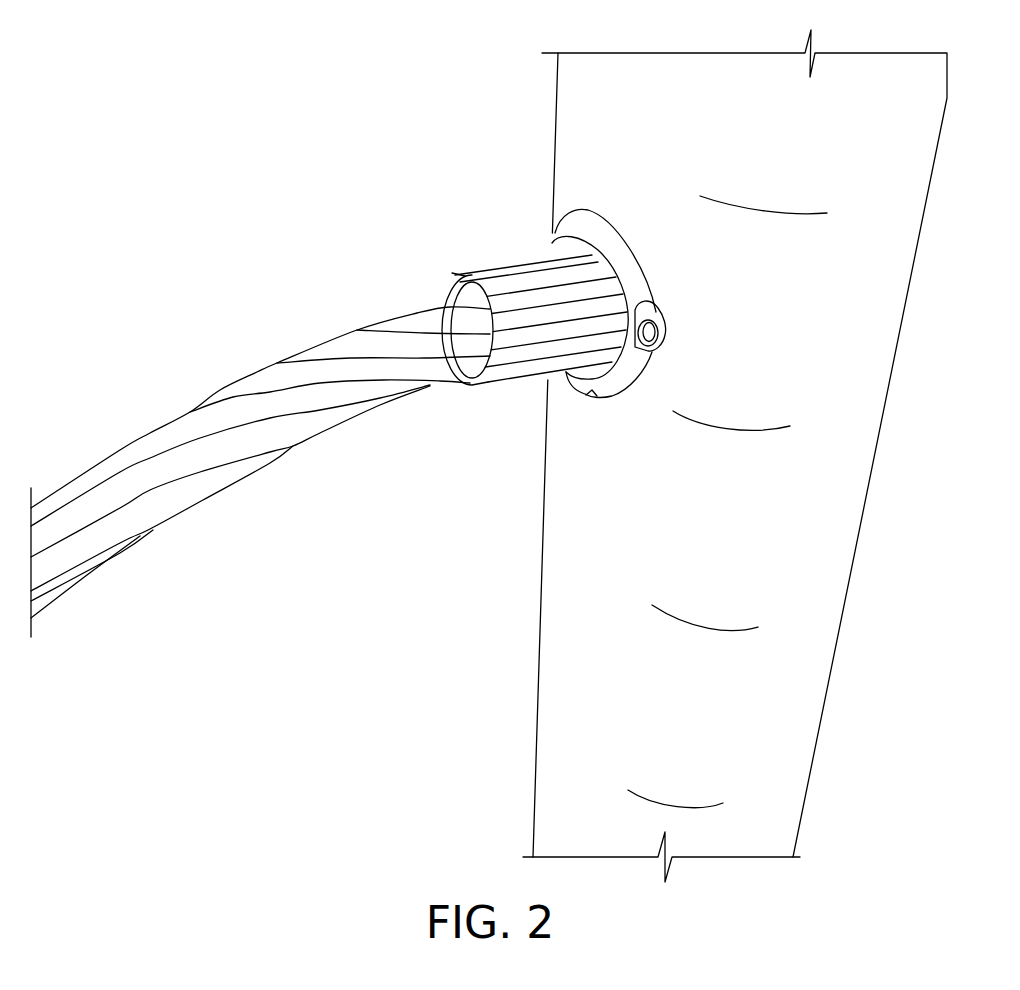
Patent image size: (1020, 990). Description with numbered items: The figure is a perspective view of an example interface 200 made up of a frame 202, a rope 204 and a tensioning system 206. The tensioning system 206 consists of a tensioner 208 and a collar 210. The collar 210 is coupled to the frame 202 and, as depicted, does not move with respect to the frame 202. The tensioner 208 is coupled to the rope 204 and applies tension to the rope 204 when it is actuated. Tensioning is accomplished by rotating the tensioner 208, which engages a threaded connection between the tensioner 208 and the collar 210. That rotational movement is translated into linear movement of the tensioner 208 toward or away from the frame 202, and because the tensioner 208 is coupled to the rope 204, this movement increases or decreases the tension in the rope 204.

The interface 200 is at (143, 101).
The frame 202 is at (552, 132).
The rope 204 is at (256, 372).
The tensioning system 206 is at (498, 226).
The tensioner 208 is at (515, 388).
The collar 210 is at (600, 392).